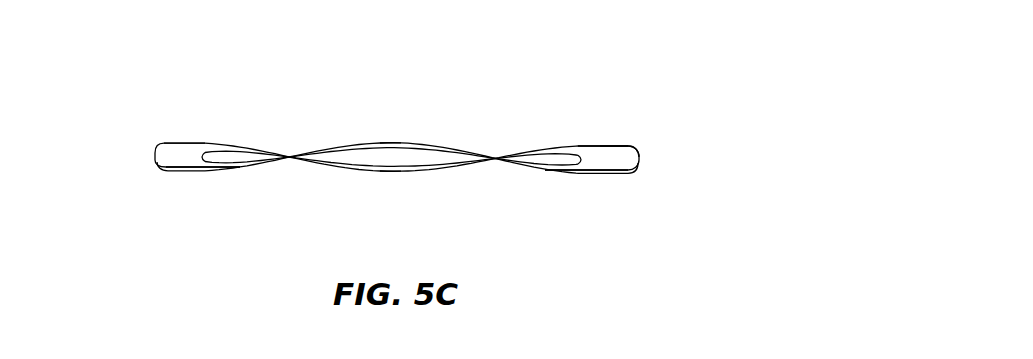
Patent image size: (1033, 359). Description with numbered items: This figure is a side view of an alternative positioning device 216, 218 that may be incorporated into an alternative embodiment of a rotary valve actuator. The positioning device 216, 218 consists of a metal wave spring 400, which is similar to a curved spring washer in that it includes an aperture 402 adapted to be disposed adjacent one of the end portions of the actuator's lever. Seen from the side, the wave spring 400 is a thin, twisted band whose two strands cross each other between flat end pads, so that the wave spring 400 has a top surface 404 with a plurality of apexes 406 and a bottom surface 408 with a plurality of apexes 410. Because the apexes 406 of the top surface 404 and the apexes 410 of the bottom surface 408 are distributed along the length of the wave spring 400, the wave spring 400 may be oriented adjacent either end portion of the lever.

The wave spring 400 is at (623, 142).
The aperture 402 is at (541, 146).
The top surface 404 is at (177, 153).
The apexes 406 is at (201, 150).
The bottom surface 408 is at (263, 166).
The apexes 410 is at (157, 167).
The positioning device 216 is at (701, 115).
The positioning device 218 is at (672, 110).